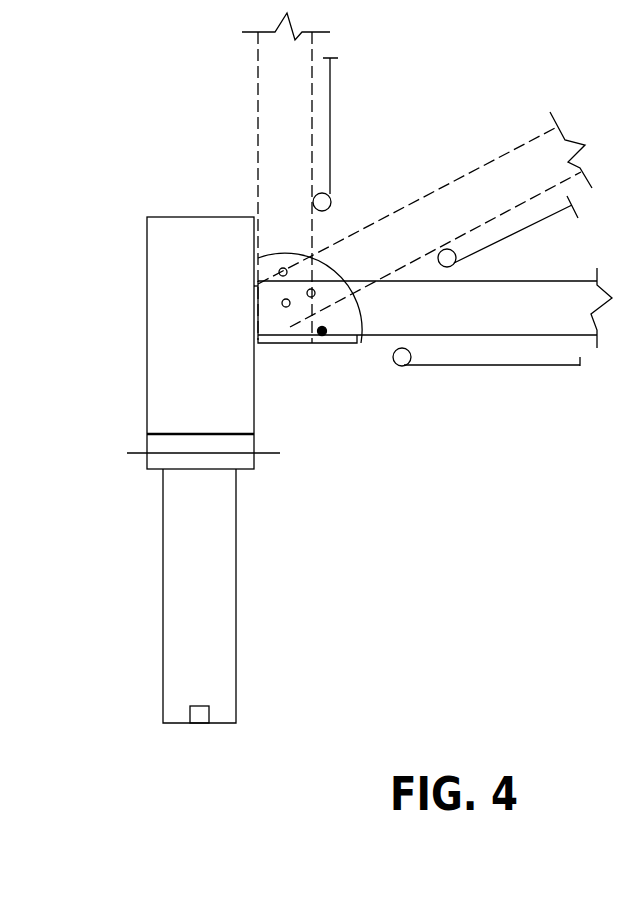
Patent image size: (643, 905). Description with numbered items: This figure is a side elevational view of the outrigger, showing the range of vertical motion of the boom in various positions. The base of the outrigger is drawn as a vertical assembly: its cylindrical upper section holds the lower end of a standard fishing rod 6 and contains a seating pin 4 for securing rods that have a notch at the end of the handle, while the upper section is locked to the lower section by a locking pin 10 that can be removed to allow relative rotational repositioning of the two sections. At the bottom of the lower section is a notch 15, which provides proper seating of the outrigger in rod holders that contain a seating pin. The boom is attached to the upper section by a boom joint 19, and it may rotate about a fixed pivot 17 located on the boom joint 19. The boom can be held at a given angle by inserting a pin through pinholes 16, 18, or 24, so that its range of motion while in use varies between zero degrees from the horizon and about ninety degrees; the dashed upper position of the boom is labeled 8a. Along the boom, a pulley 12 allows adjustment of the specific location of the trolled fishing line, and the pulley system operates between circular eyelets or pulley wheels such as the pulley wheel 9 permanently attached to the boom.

The seating pin 4 is at (147, 430).
The fishing rod 6 is at (147, 293).
The upper strut 8a is at (258, 78).
The pulley wheel 9 is at (404, 365).
The locking pin 10 is at (122, 455).
The pulley 12 is at (527, 366).
The notch 15 is at (200, 724).
The pinhole 16 is at (314, 289).
The fixed pivot 17 is at (285, 308).
The pinhole 18 is at (322, 336).
The boom joint 19 is at (348, 344).
The pinhole 24 is at (280, 269).